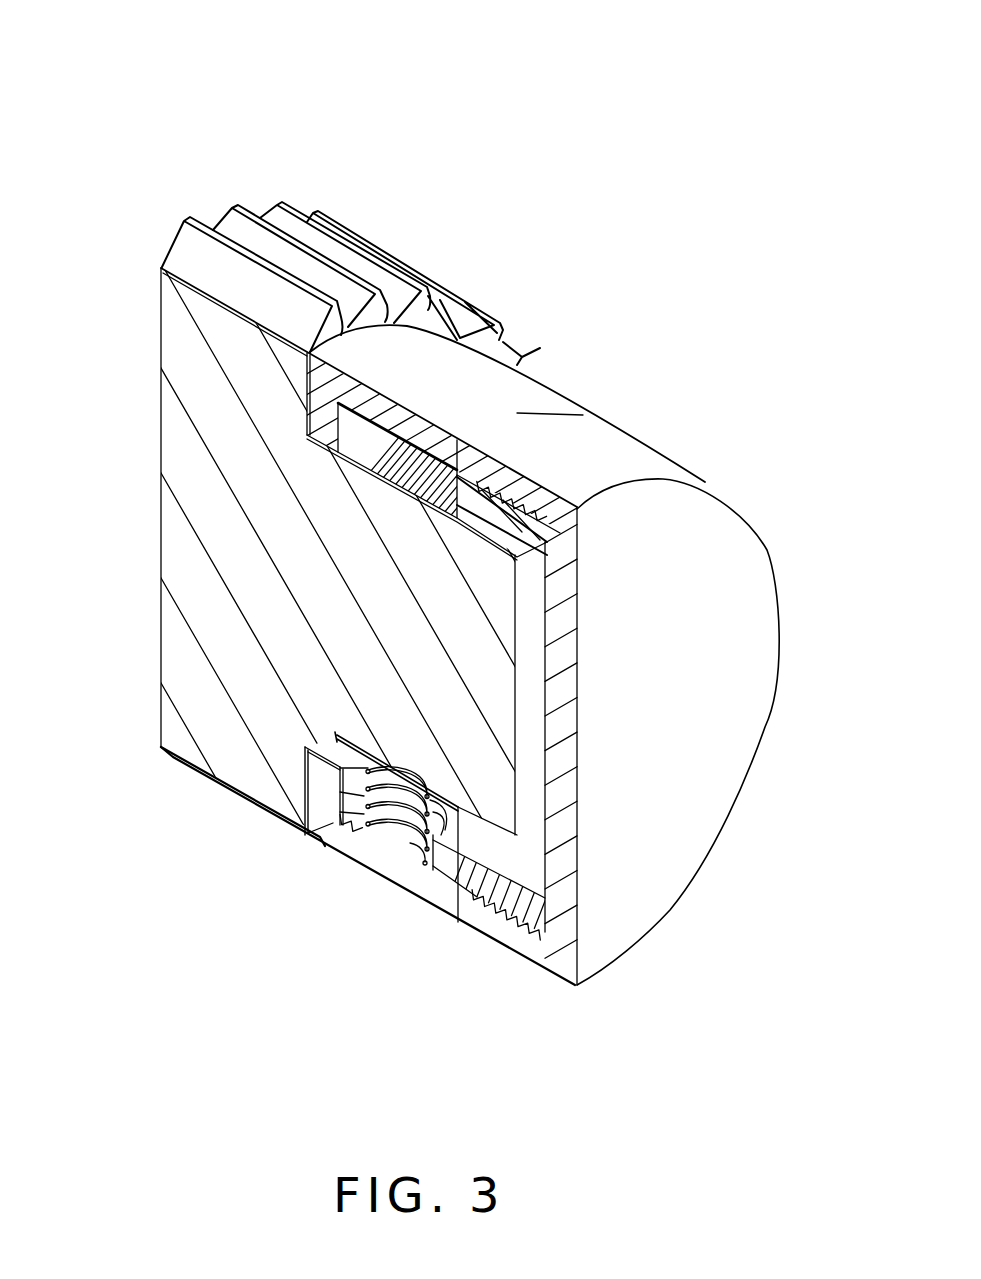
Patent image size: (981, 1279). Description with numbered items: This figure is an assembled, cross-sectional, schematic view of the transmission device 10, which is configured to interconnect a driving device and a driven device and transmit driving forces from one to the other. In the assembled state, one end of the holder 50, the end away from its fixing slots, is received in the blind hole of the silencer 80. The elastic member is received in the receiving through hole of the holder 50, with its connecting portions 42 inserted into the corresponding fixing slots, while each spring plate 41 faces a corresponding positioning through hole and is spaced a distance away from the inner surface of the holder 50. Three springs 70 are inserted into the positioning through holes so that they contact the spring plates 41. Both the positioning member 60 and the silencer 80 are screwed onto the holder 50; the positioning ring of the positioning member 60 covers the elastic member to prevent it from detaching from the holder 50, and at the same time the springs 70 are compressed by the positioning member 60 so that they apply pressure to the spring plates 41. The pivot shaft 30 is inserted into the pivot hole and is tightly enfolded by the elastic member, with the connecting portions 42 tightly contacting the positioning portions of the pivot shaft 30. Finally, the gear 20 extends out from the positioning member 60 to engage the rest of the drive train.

The transmission device 10 is at (311, 47).
The gear 20 is at (229, 223).
The pivot shaft 30 is at (318, 780).
The spring plate 41 is at (455, 845).
The connecting portion 42 is at (340, 430).
The holder 50 is at (510, 917).
The positioning member 60 is at (478, 390).
The spring 70 is at (390, 823).
The silencer 80 is at (603, 463).